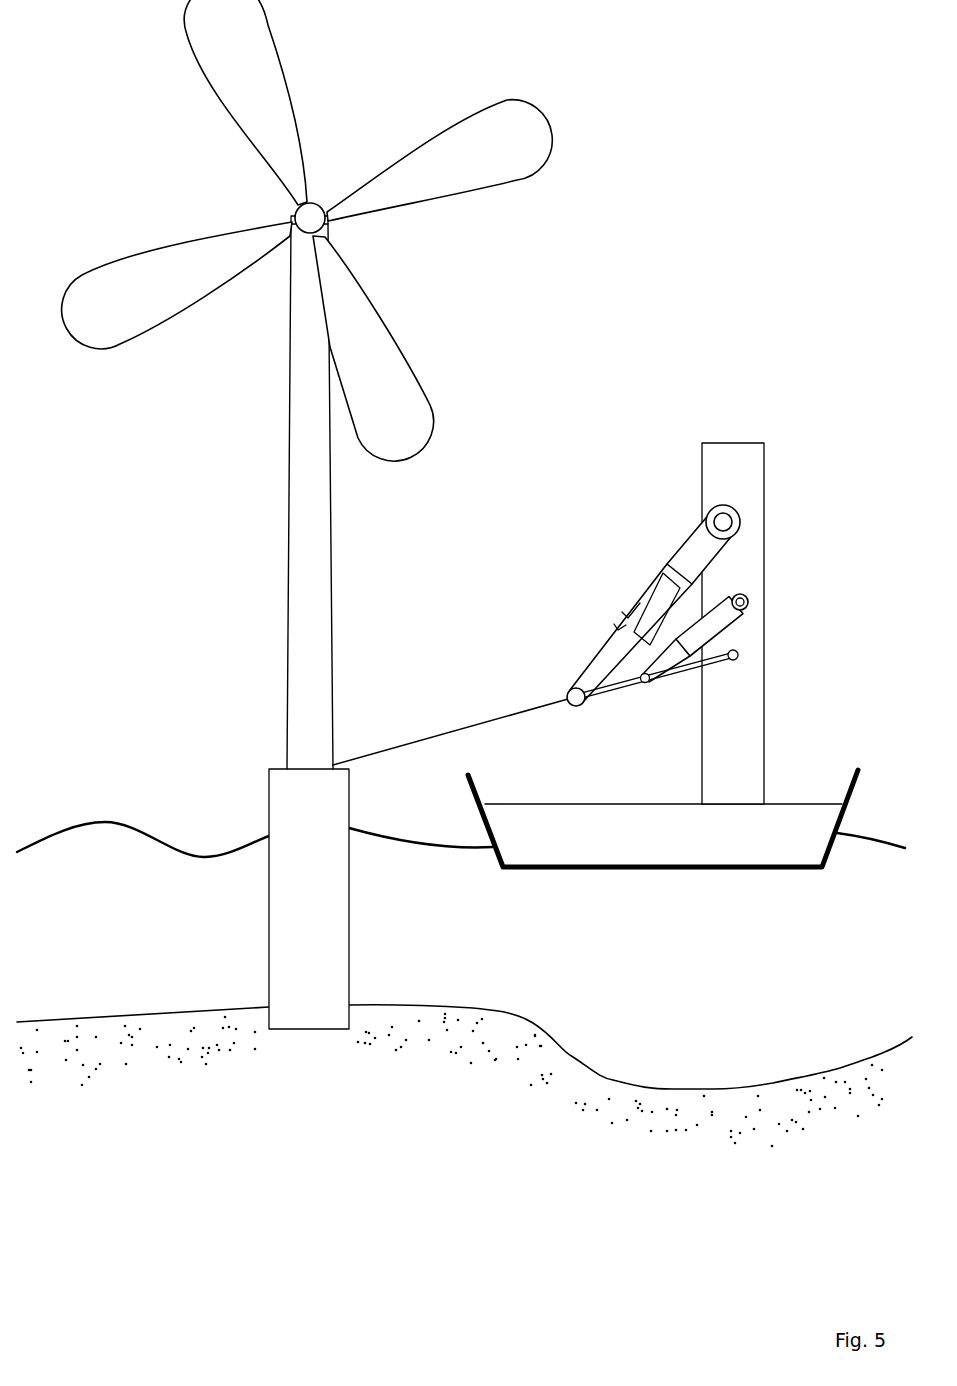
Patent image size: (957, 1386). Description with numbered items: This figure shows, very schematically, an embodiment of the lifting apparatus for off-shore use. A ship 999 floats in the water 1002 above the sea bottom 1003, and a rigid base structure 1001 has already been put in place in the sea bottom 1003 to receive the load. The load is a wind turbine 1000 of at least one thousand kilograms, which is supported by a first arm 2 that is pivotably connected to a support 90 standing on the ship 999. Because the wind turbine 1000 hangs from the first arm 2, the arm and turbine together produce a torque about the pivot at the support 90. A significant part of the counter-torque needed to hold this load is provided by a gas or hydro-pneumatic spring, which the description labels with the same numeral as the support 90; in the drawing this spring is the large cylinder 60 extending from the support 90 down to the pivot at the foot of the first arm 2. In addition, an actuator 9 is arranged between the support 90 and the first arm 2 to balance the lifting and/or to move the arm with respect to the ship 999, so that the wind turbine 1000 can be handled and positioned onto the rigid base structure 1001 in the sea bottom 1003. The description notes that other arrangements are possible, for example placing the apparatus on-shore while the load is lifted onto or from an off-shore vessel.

The wind turbine 1000 is at (312, 655).
The rigid base structure 1001 is at (323, 1007).
The water 1002 is at (163, 866).
The sea bottom 1003 is at (197, 1023).
The hydraulic cylinder 60 is at (741, 532).
The actuator 9 is at (718, 614).
The first arm 2 is at (717, 657).
The support 90 is at (748, 710).
The ship 999 is at (713, 820).